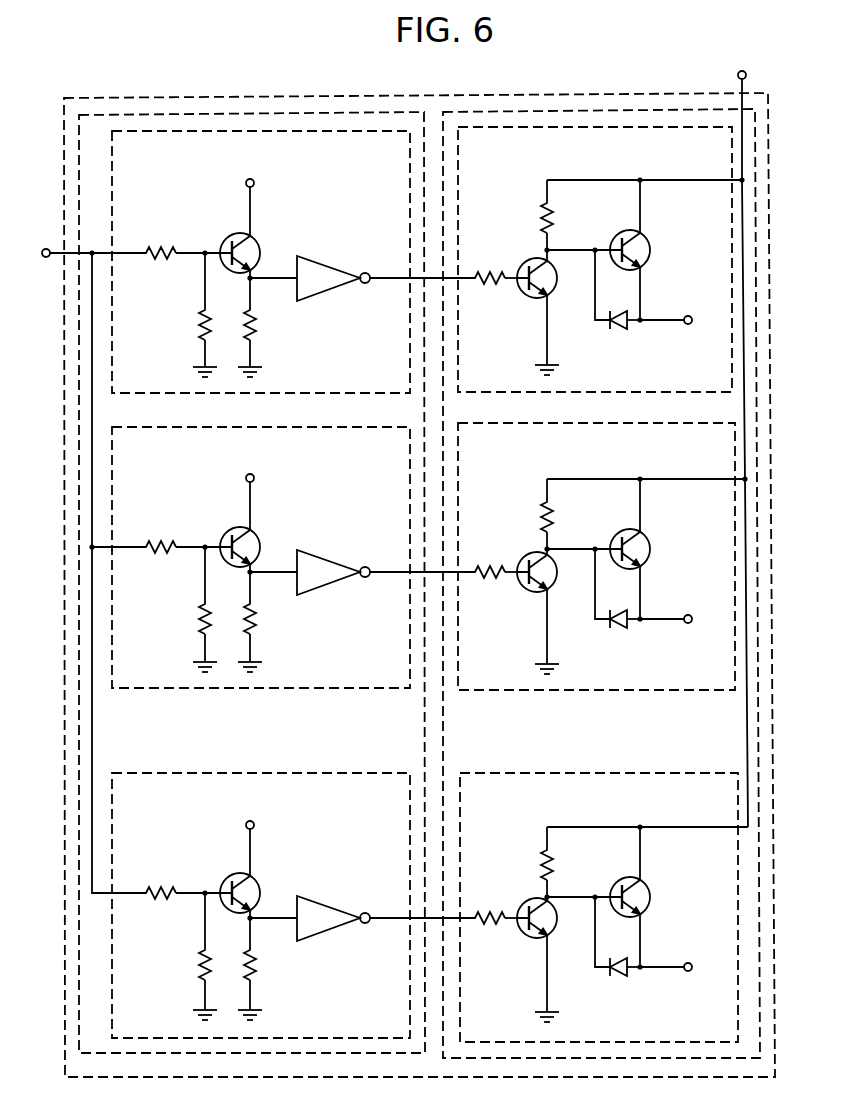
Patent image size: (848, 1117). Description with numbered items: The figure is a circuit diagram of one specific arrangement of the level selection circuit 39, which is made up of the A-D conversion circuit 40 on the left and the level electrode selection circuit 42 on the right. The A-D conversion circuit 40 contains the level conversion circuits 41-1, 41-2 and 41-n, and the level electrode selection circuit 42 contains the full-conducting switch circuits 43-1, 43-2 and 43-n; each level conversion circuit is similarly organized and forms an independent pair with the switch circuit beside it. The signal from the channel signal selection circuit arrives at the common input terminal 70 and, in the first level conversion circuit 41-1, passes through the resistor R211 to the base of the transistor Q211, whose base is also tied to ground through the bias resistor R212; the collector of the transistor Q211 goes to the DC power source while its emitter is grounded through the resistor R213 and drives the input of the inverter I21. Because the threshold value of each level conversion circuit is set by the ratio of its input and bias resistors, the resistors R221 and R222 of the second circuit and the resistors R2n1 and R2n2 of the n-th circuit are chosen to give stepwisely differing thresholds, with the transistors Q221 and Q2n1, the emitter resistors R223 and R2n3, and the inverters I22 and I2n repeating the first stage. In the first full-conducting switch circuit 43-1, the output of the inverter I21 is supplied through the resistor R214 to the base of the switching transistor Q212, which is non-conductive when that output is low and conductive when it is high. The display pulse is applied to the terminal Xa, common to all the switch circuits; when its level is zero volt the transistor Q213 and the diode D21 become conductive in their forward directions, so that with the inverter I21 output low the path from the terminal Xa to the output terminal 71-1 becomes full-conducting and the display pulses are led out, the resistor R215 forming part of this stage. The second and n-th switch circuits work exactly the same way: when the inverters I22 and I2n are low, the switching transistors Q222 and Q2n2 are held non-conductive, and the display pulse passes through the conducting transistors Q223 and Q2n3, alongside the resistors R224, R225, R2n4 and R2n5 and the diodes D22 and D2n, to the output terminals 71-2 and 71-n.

The level selection circuit 39 is at (357, 97).
The A-D conversion circuit 40 is at (155, 114).
The level electrode selection circuit 42 is at (575, 110).
The common input terminal 70 is at (42, 251).
The terminal Xa is at (738, 76).
The first level conversion circuit 41-1 is at (228, 393).
The second level conversion circuit 41-2 is at (312, 690).
The n-th level conversion circuit 41-n is at (232, 773).
The first full-conducting switch circuit 43-1 is at (583, 392).
The second full-conducting switch circuit 43-2 is at (620, 692).
The n-th full-conducting switch circuit 43-n is at (500, 773).
The output terminal 71-1 is at (703, 308).
The output terminal 71-2 is at (703, 607).
The output terminal 71-n is at (703, 955).
The resistor R211 is at (187, 242).
The bias resistor R212 is at (184, 315).
The resistor R213 is at (267, 342).
The resistor R214 is at (499, 290).
The resistor R215 is at (641, 214).
The transistor Q211 is at (258, 254).
The switching transistor Q212 is at (534, 298).
The transistor Q213 is at (650, 252).
The inverter I21 is at (322, 263).
The diode D21 is at (613, 329).
The resistor R221 is at (187, 536).
The resistor R222 is at (183, 609).
The resistor R223 is at (267, 636).
The resistor R224 is at (498, 588).
The resistor R225 is at (643, 513).
The transistor Q221 is at (258, 549).
The switching transistor Q222 is at (534, 592).
The transistor Q223 is at (650, 550).
The inverter I22 is at (326, 594).
The diode D22 is at (613, 628).
The resistor R2n1 is at (187, 882).
The resistor R2n2 is at (181, 956).
The resistor R2n3 is at (267, 983).
The resistor R2n4 is at (498, 933).
The resistor R2n5 is at (644, 861).
The transistor Q2n1 is at (258, 895).
The switching transistor Q2n2 is at (534, 938).
The transistor Q2n3 is at (650, 898).
The inverter I2n is at (326, 940).
The diode D2n is at (613, 976).